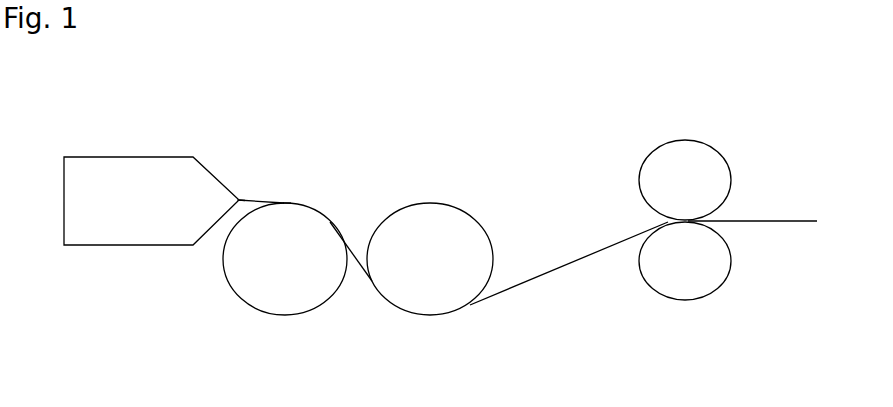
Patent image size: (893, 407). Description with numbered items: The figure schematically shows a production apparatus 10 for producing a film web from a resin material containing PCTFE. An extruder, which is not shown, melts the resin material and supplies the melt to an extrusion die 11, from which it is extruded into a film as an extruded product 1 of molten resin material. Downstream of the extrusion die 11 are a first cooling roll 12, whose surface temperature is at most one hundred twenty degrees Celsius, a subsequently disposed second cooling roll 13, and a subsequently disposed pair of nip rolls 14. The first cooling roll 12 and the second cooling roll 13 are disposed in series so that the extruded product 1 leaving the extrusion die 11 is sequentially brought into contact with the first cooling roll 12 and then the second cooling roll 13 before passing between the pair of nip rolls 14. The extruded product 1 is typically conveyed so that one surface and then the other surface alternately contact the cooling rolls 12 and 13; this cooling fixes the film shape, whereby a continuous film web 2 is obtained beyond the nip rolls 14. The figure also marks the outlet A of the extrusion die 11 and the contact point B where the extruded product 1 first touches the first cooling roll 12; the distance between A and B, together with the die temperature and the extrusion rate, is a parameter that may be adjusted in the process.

The extruded product 1 is at (260, 201).
The film web 2 is at (789, 222).
The production apparatus 10 is at (753, 119).
The extrusion die 11 is at (129, 246).
The first cooling roll 12 is at (285, 316).
The second cooling roll 13 is at (430, 316).
The pair of nip rolls 14 is at (686, 301).
The outlet of the extrusion die A is at (240, 200).
The contact point B is at (288, 202).